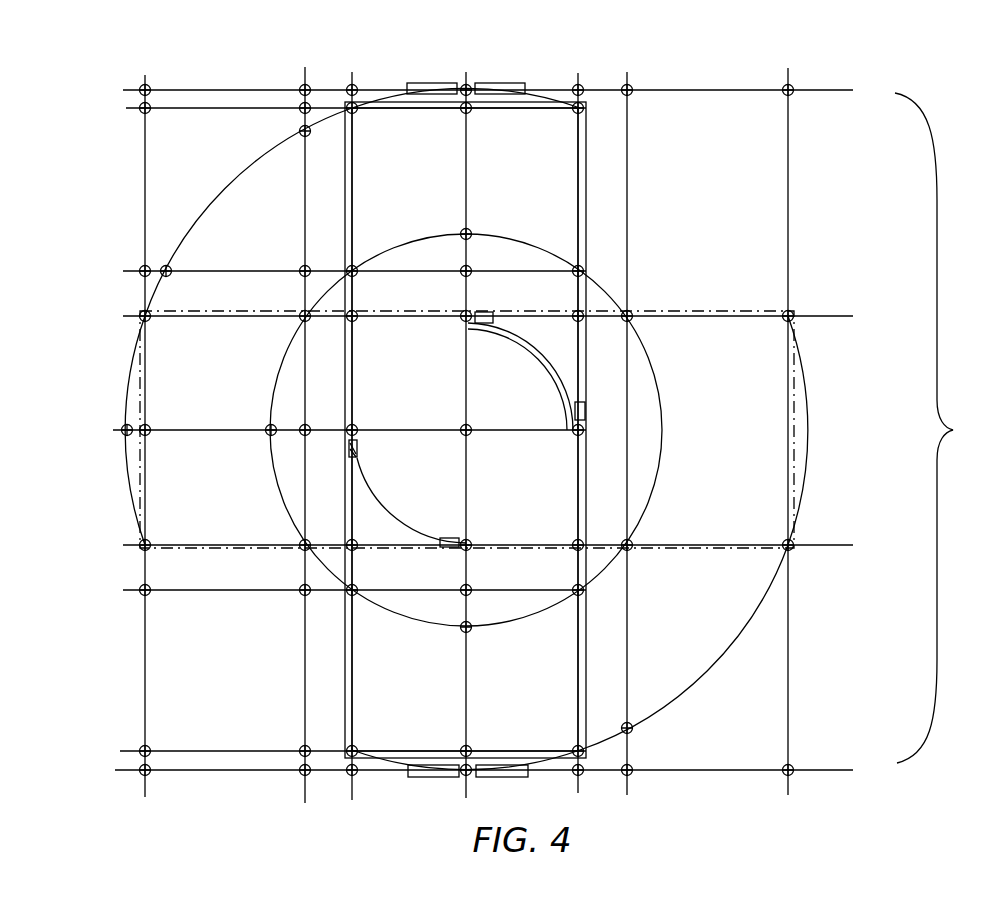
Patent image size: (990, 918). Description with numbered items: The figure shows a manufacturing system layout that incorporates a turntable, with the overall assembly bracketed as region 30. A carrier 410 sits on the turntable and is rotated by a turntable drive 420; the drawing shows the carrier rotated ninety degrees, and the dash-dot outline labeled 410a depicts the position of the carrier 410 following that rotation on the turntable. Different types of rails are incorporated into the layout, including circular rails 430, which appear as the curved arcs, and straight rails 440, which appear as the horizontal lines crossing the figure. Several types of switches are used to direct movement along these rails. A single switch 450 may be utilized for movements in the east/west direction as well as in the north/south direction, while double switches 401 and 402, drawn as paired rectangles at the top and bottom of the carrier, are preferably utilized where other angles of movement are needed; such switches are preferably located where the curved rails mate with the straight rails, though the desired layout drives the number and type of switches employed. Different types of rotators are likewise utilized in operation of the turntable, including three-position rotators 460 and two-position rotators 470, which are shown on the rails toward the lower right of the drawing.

The display panel assembly 30 is at (939, 428).
The double switch 401 is at (502, 83).
The double switch 402 is at (505, 777).
The carrier 410 is at (586, 190).
The carrier position following rotation 410a is at (668, 305).
The turntable drive 420 is at (543, 373).
The circular rails 430 is at (807, 466).
The straight rails 440 is at (828, 537).
The single switch 450 is at (358, 446).
The 3-position rotators 460 is at (634, 732).
The 2-position rotators 470 is at (795, 765).